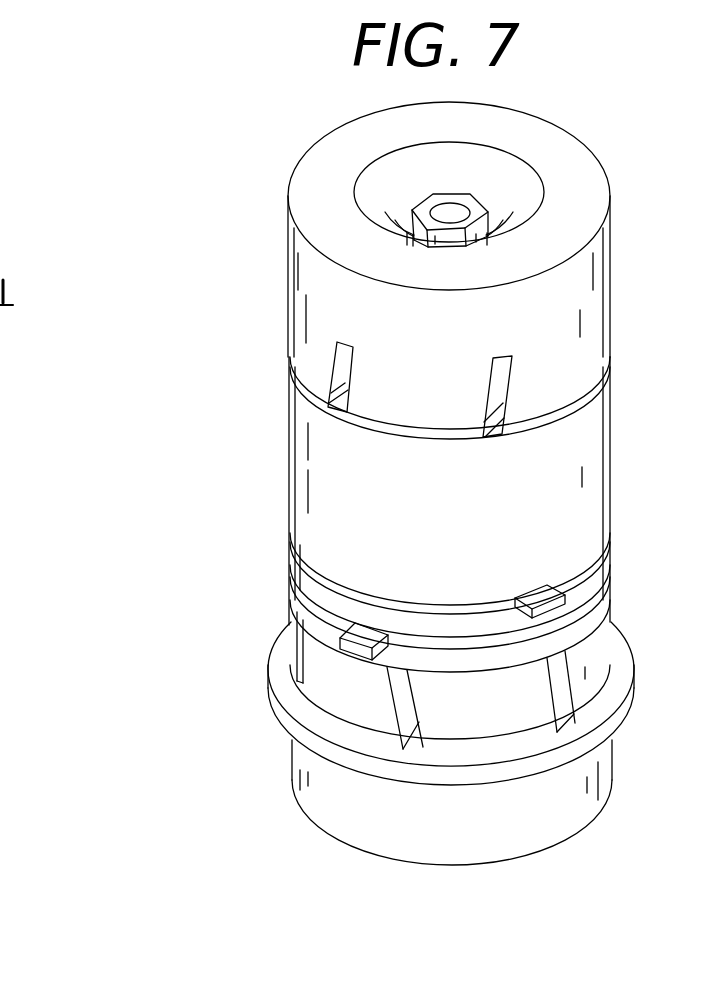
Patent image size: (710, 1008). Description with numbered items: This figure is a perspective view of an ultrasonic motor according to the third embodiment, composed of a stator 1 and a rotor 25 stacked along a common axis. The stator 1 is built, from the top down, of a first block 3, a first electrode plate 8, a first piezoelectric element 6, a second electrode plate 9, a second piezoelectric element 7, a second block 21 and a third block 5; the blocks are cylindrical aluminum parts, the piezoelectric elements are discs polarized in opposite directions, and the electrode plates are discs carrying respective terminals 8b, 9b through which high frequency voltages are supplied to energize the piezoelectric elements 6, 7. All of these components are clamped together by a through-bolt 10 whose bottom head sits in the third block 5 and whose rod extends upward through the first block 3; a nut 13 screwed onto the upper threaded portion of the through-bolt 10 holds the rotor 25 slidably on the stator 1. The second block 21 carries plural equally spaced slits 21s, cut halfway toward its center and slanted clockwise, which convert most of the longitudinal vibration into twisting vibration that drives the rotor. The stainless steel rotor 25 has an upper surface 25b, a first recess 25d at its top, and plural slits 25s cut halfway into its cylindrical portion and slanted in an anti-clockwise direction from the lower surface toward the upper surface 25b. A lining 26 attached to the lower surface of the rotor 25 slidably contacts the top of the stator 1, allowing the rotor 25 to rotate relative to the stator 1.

The stator 1 is at (675, 413).
The first block 3 is at (604, 450).
The third block 5 is at (612, 758).
The first piezoelectric element 6 is at (606, 555).
The second piezoelectric element 7 is at (606, 598).
The first electrode plate 8 is at (606, 536).
The terminal 8b is at (535, 600).
The second electrode plate 9 is at (606, 574).
The terminal 9b is at (345, 642).
The through-bolt 10 is at (455, 213).
The nut 13 is at (428, 210).
The second block 21 is at (471, 698).
The slits 21s is at (553, 677).
The rotor 25 is at (486, 229).
The upper surface 25b is at (606, 194).
The first recess 25d is at (523, 178).
The slits 25s is at (348, 352).
The lining 26 is at (393, 432).